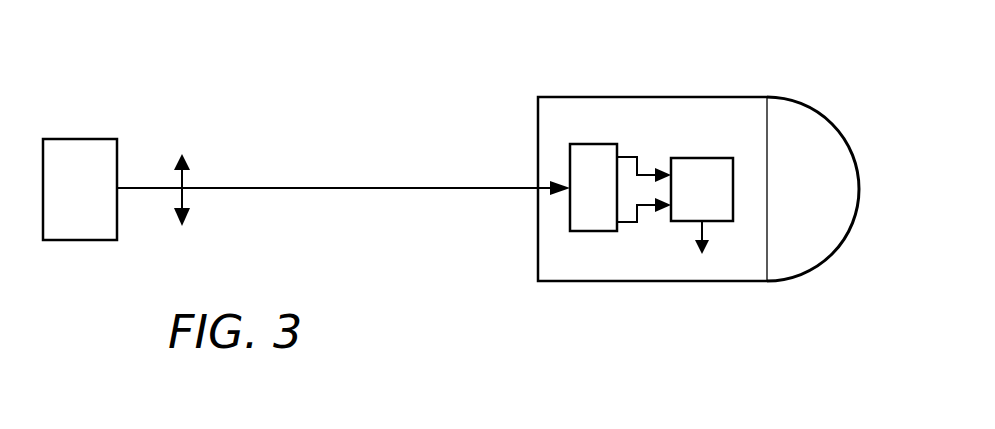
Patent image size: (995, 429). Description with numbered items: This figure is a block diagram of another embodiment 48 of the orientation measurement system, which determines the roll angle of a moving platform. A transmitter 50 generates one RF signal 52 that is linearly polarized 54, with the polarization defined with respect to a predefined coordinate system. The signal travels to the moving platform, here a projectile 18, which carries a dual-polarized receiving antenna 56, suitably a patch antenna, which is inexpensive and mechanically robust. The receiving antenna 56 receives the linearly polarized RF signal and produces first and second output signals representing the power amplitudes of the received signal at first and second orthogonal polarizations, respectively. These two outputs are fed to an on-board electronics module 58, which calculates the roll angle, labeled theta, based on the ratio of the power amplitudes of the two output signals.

The orientation measurement system embodiment 48 is at (248, 60).
The transmitter 50 is at (67, 138).
The RF signal 52 is at (443, 186).
The linear polarization 54 is at (185, 196).
The dual-polarized receiving antenna 56 is at (597, 231).
The on-board electronics module 58 is at (699, 158).
The projectile 18 is at (743, 97).